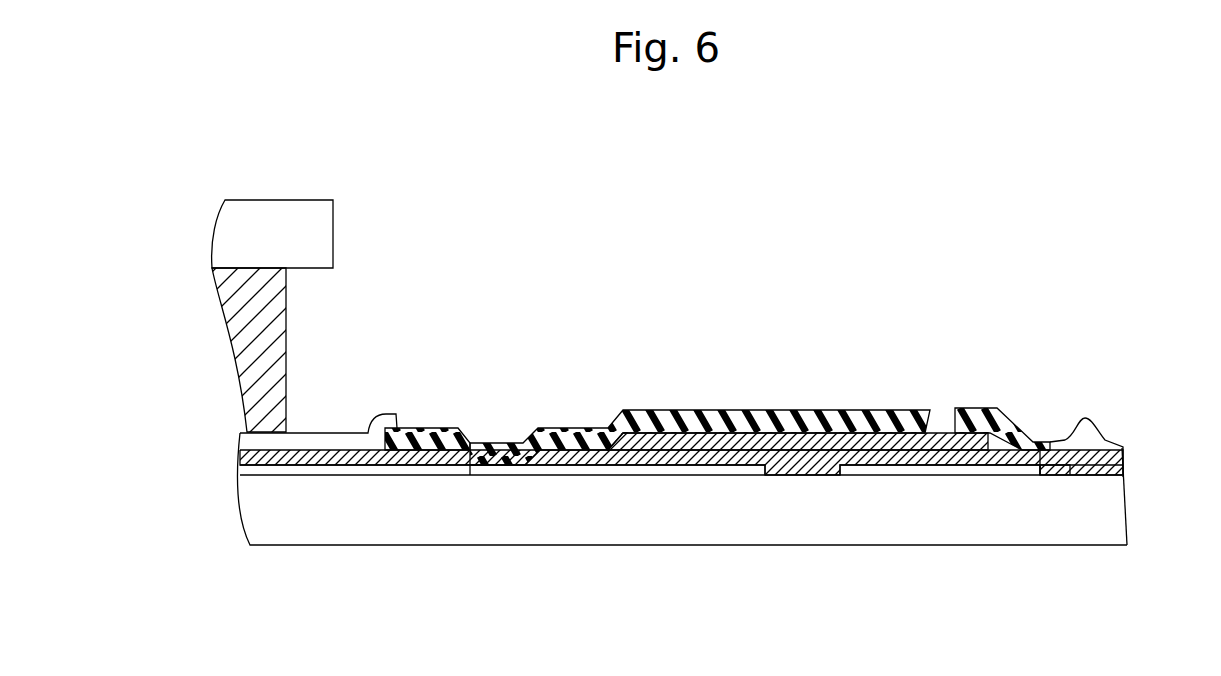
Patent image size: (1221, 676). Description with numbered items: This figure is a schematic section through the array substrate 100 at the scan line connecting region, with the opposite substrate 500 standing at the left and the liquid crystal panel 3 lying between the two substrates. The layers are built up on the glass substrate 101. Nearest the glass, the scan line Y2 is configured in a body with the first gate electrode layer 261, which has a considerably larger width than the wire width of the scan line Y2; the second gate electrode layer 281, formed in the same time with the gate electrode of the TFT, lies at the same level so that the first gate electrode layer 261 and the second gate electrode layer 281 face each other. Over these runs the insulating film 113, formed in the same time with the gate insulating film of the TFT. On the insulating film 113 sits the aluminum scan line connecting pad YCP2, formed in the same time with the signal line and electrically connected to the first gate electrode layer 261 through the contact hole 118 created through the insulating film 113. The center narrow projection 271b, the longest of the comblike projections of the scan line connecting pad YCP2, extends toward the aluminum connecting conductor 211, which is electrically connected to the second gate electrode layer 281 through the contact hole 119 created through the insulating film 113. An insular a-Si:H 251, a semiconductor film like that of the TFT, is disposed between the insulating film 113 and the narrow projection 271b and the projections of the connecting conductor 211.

The liquid crystal panel 3 is at (506, 215).
The opposite substrate 500 is at (318, 224).
The array substrate 100 is at (1210, 507).
The glass substrate 101 is at (1118, 532).
The insulating film 113 is at (240, 457).
The contact hole 118 is at (475, 452).
The contact hole 119 is at (1045, 463).
The connecting conductor 211 is at (1025, 430).
The insular a-Si:H 251 is at (818, 410).
The first gate electrode layer 261 is at (560, 470).
The narrow projection 271b is at (648, 410).
The second gate electrode layer 281 is at (890, 476).
The scan line Y2 is at (272, 473).
The scan line connecting pad YCP2 is at (925, 408).